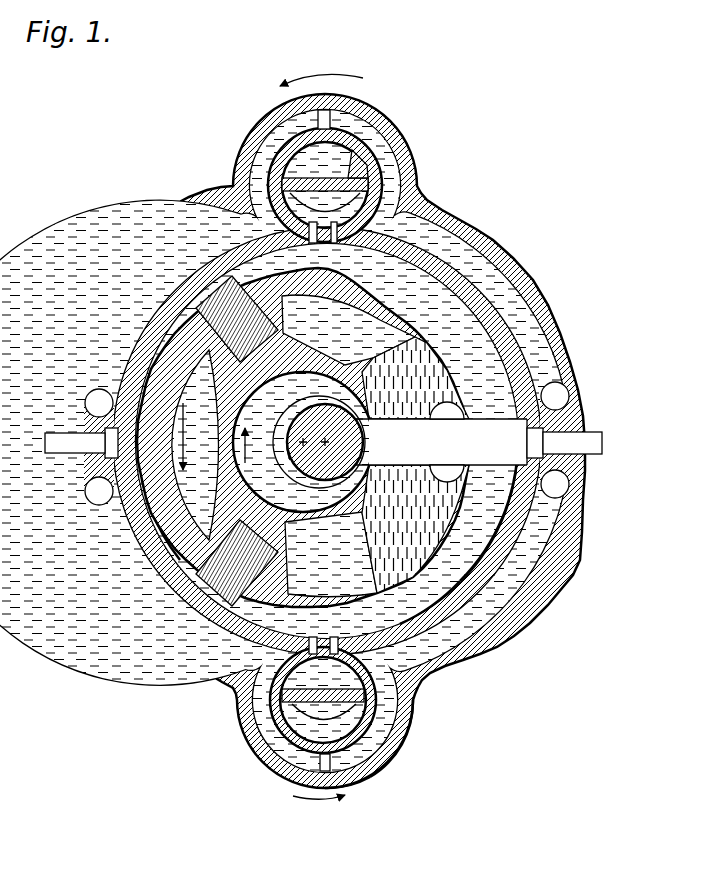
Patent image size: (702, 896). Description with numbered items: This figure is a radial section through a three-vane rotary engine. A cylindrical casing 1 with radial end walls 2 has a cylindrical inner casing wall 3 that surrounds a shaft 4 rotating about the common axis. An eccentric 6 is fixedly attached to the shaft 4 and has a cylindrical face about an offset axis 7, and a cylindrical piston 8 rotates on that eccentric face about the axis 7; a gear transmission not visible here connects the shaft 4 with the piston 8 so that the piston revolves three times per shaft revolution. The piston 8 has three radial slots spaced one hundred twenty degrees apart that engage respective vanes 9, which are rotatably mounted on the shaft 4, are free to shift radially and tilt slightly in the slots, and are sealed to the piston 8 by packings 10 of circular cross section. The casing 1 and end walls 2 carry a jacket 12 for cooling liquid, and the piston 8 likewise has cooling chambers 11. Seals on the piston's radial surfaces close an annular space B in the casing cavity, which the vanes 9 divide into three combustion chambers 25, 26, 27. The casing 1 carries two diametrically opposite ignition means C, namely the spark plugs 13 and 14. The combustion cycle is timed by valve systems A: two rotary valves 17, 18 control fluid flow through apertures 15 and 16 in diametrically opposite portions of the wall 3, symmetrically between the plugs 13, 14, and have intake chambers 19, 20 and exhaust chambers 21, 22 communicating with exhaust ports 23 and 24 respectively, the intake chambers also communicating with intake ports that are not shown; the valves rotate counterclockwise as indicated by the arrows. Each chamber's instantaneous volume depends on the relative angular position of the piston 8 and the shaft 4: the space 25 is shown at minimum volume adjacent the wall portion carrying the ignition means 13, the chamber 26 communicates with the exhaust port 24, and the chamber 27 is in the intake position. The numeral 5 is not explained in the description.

The cylindrical casing 1 is at (237, 257).
The radial end walls 2 is at (515, 498).
The cylindrical inner casing wall 3 is at (427, 271).
The shaft 4 is at (338, 410).
The bearing ring 5 is at (297, 402).
The eccentric 6 is at (258, 492).
The axis 7 is at (287, 438).
The piston 8 is at (398, 388).
The vanes 9 is at (283, 331).
The packings 10 is at (348, 330).
The cooling chambers 11 is at (308, 580).
The jacket 12 is at (98, 521).
The spark plug 13 is at (55, 441).
The spark plug 14 is at (600, 440).
The aperture 15 is at (337, 644).
The aperture 16 is at (338, 243).
The rotary valve 17 is at (407, 730).
The rotary valve 18 is at (355, 160).
The intake chamber 19 is at (308, 689).
The intake chamber 20 is at (308, 170).
The exhaust chamber 21 is at (370, 777).
The exhaust chamber 22 is at (317, 222).
The exhaust port 23 is at (308, 730).
The exhaust port 24 is at (308, 216).
The combustion chamber 25 is at (170, 547).
The combustion chamber 26 is at (465, 378).
The combustion chamber 27 is at (443, 565).
The valve systems A is at (285, 805).
The annular space B is at (409, 603).
The ignition means C is at (596, 470).